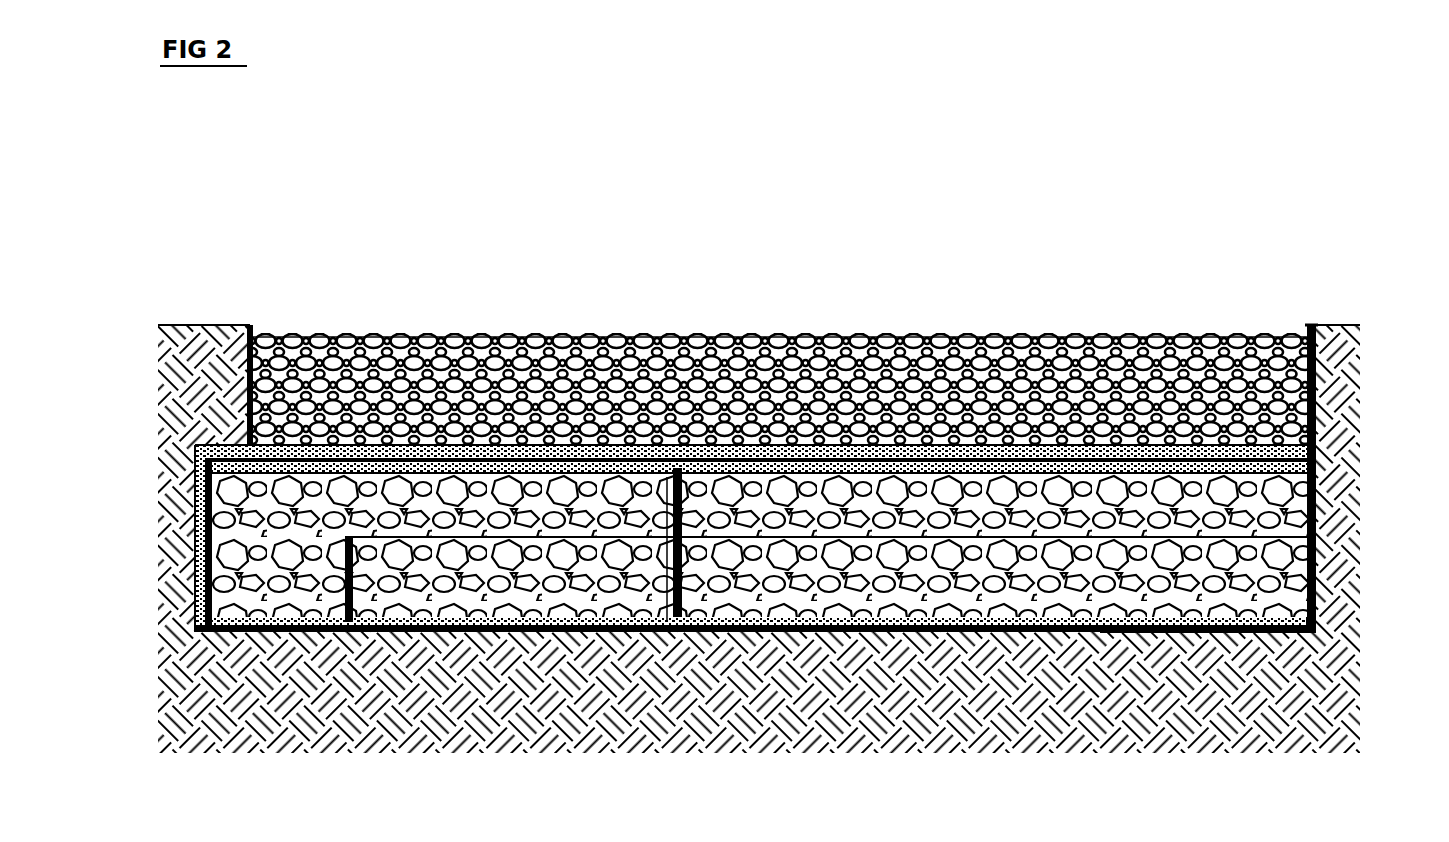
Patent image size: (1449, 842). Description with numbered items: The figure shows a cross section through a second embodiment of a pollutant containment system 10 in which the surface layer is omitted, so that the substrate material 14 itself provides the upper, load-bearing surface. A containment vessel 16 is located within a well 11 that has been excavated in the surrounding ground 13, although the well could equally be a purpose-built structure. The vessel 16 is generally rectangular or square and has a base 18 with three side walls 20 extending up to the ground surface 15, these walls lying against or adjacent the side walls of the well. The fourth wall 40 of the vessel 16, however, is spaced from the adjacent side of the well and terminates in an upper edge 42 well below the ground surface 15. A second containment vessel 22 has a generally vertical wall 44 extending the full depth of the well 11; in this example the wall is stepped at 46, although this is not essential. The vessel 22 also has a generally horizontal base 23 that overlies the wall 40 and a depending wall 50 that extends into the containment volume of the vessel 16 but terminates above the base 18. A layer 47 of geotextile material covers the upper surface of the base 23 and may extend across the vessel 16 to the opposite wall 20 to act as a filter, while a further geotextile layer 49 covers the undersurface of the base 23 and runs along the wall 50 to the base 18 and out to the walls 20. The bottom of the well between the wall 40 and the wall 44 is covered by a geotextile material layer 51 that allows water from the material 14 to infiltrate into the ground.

The pollutant containment system 10 is at (988, 300).
The well 11 is at (1318, 644).
The soil / ground 13 is at (1333, 327).
The substrate layer 14 is at (892, 337).
The ground surface 15 is at (208, 325).
The containment vessel 16 is at (1322, 490).
The base 18 is at (1253, 643).
The side walls 20 is at (1310, 327).
The second containment vessel 22 is at (258, 331).
The base of second containment vessel 23 is at (577, 442).
The fourth wall 40 is at (262, 652).
The upper edge 42 is at (202, 563).
The generally vertical wall 44 is at (192, 476).
The step 46 is at (188, 408).
The geotextile layer 47 is at (1098, 425).
The further geotextile layer 49 is at (192, 487).
The depending wall 50 is at (735, 485).
The geotextile material layer 51 is at (200, 598).